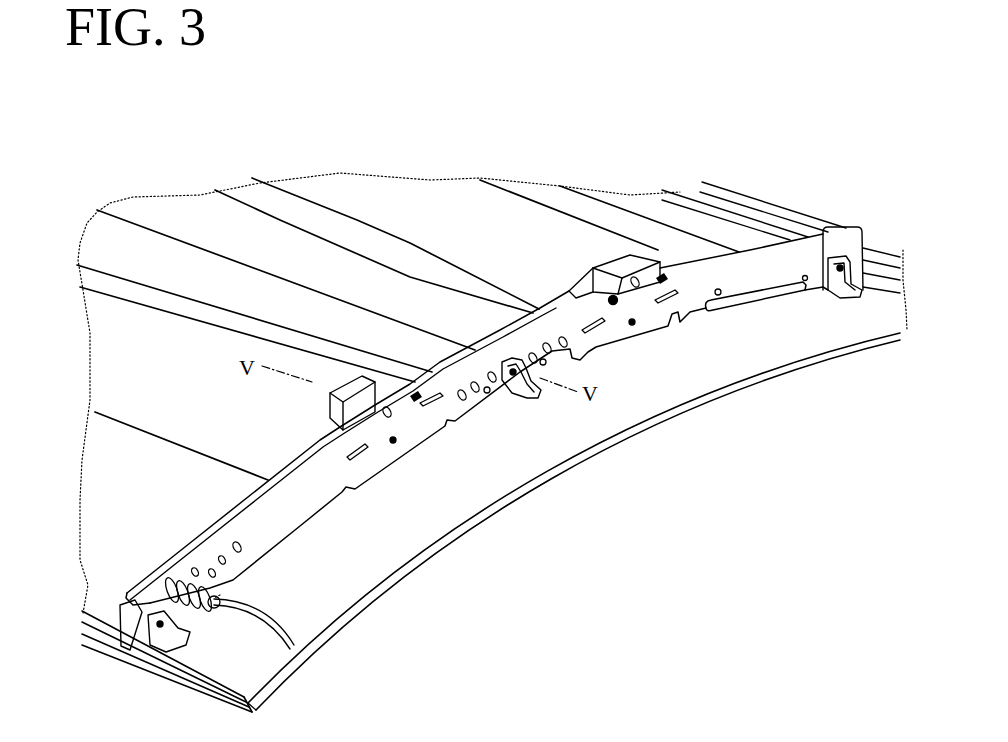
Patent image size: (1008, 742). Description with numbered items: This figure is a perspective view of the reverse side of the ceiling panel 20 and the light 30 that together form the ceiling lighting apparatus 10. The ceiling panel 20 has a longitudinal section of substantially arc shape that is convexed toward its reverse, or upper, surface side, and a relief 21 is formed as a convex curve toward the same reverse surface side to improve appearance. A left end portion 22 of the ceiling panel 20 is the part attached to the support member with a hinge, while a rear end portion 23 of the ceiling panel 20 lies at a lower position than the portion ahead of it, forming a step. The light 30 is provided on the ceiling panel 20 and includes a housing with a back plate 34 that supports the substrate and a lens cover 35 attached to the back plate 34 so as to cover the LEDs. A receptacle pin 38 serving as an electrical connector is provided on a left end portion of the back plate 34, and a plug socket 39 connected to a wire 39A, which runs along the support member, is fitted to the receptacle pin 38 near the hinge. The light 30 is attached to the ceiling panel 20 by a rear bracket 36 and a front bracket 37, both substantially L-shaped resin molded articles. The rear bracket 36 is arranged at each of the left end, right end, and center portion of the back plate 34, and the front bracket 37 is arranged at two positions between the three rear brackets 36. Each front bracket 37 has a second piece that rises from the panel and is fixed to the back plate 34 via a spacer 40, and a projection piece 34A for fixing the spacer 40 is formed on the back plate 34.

The ceiling lighting apparatus 10 is at (530, 100).
The ceiling panel 20 is at (782, 373).
The relief 21 is at (108, 272).
The left end portion 22 is at (100, 652).
The rear end portion 23 is at (713, 377).
The light 30 is at (850, 226).
The back plate 34 is at (733, 250).
The projection piece 34A is at (403, 400).
The lens cover 35 is at (217, 516).
The rear bracket 36 is at (165, 650).
The front bracket 37 is at (350, 385).
The receptacle pin 38 is at (170, 588).
The plug socket 39 is at (220, 595).
The wire 39A is at (275, 636).
The spacer 40 is at (350, 400).